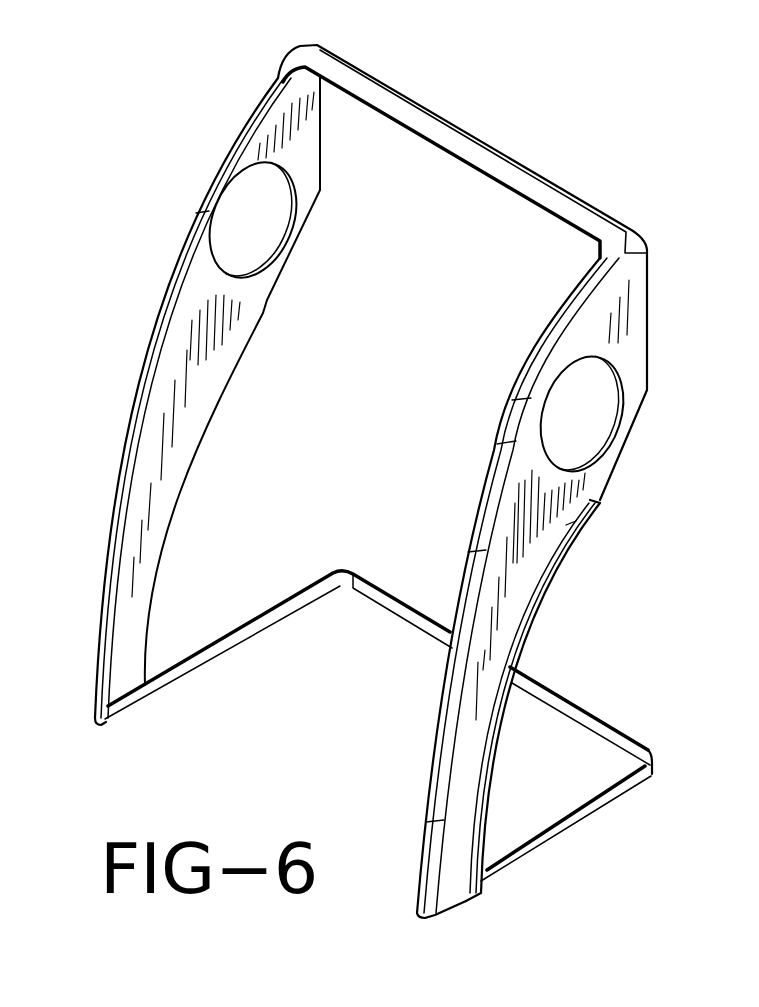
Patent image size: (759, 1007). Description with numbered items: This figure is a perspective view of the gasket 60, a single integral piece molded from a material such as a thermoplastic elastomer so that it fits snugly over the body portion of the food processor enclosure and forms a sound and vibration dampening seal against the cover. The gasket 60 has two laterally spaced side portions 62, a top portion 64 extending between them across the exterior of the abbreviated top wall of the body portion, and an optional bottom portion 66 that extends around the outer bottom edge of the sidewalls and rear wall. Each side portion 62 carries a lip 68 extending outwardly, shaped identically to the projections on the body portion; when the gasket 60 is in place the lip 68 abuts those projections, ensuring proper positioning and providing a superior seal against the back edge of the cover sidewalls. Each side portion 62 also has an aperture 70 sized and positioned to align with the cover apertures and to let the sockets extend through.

The gasket 60 is at (87, 196).
The side portions 62 is at (173, 407).
The top portion 64 is at (457, 130).
The bottom portion 66 is at (620, 730).
The lip 68 is at (543, 587).
The aperture 70 is at (285, 230).